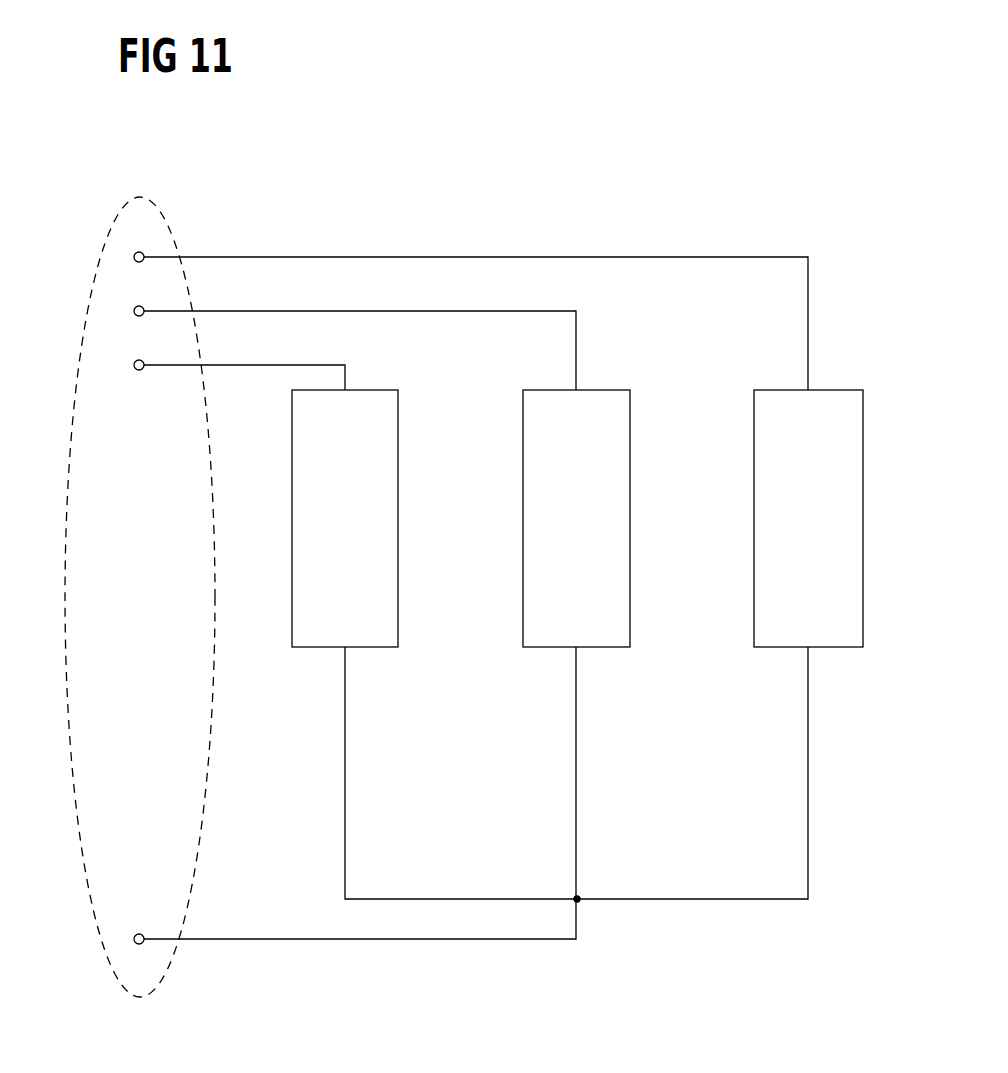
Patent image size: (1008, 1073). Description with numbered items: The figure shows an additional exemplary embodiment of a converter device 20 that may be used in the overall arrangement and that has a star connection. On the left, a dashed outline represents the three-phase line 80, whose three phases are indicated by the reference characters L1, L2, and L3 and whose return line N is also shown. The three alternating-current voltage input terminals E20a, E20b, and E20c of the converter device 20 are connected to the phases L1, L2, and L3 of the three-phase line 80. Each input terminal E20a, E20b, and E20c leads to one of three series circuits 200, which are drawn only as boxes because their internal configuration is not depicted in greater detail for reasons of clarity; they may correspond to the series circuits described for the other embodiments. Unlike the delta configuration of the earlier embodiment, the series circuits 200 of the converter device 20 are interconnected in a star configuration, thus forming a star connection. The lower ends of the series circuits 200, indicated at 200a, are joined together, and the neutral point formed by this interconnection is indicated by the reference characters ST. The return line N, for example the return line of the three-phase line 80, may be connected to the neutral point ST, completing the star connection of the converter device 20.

The converter device 20 is at (845, 248).
The three-phase line 80 is at (77, 812).
The series circuits 200 is at (373, 390).
The series circuit output 200a is at (345, 647).
The alternating-current voltage input terminal E20a is at (215, 257).
The alternating-current voltage input terminal E20b is at (215, 311).
The alternating-current voltage input terminal E20c is at (215, 365).
The phase L1 is at (138, 239).
The phase L2 is at (138, 294).
The phase L3 is at (138, 348).
The return line N is at (139, 921).
The neutral point ST is at (580, 903).